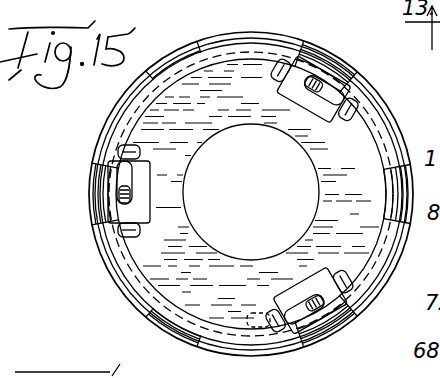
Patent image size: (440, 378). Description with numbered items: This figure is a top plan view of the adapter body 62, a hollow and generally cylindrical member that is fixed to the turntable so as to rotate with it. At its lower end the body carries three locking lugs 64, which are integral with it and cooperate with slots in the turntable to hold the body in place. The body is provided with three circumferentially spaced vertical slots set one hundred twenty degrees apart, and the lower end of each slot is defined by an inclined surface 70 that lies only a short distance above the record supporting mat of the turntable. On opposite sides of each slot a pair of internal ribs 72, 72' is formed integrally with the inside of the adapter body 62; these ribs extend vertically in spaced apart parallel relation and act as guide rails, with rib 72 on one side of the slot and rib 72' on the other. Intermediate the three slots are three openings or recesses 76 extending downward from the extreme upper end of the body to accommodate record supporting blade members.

The adapter body 62 is at (98, 133).
The locking lugs 64 is at (133, 190).
The inclined surfaces 70 is at (328, 67).
The internal rib 72 is at (236, 175).
The internal rib 72' is at (241, 214).
The openings or recesses 76 is at (200, 44).